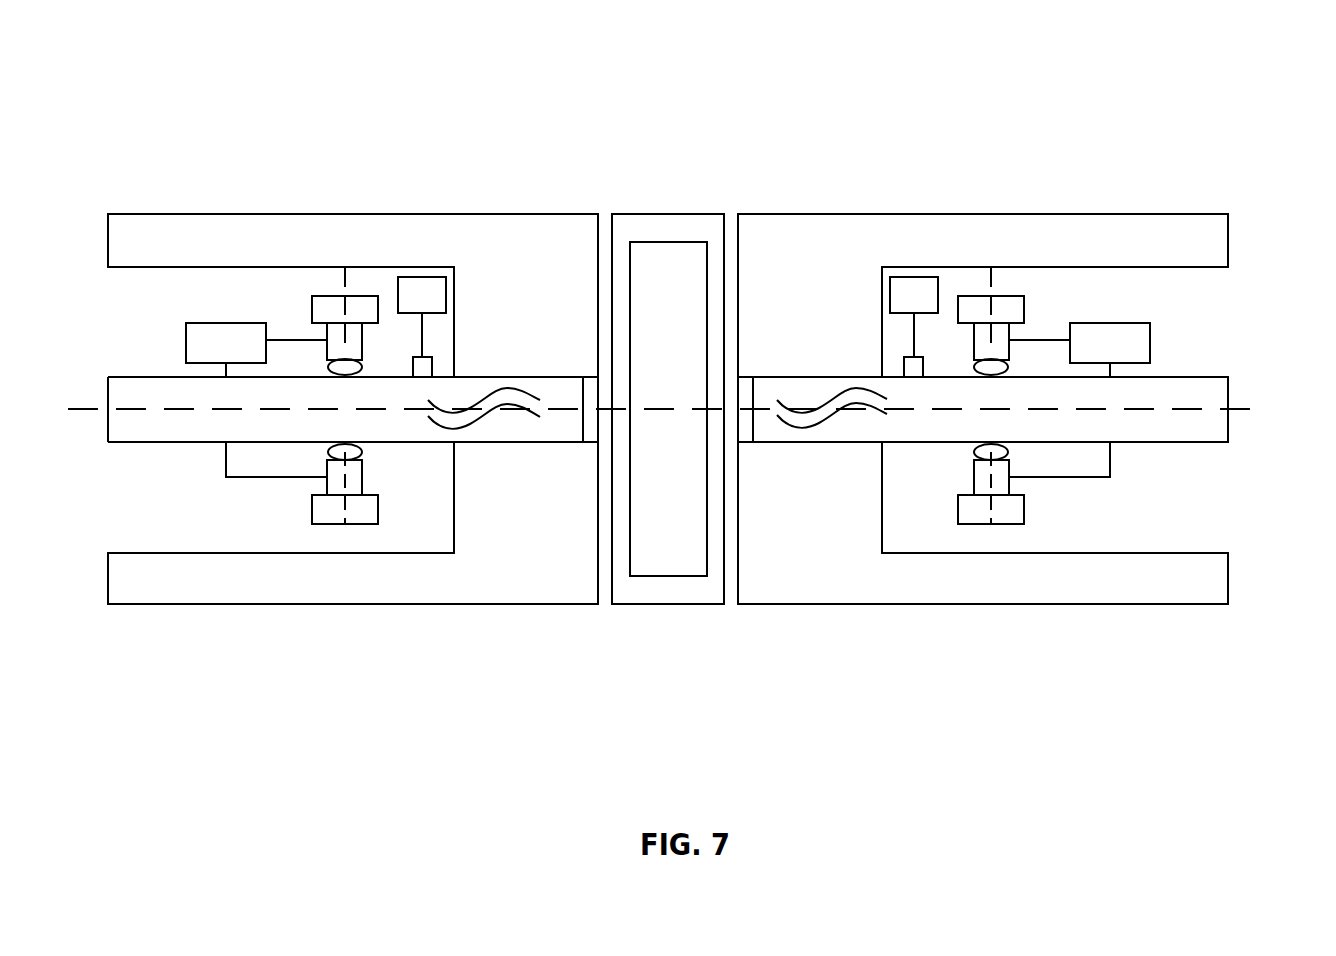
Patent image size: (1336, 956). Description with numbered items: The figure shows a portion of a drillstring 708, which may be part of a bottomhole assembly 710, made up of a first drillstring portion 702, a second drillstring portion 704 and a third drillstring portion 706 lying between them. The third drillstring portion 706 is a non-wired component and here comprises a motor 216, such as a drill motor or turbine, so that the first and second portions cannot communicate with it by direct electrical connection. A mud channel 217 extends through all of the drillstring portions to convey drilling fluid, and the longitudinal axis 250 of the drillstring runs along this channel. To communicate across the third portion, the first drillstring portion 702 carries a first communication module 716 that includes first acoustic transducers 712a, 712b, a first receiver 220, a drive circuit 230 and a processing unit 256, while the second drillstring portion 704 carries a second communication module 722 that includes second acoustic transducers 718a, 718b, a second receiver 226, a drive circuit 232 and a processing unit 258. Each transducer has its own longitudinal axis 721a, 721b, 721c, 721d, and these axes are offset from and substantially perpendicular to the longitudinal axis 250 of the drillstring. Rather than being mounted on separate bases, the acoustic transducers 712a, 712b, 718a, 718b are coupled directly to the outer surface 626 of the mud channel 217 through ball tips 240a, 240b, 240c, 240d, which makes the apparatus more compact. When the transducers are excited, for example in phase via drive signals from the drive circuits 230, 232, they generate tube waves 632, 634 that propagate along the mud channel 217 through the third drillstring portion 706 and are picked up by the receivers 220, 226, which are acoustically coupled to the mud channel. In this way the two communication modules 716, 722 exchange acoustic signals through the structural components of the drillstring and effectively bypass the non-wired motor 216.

The drillstring 708 is at (342, 102).
The bottomhole assembly 710 is at (482, 100).
The first communication module 716 is at (426, 232).
The second communication module 722 is at (1046, 232).
The first drillstring portion 702 is at (340, 605).
The second drillstring portion 704 is at (798, 605).
The third drillstring portion 706 is at (668, 605).
The motor 216 is at (672, 242).
The mud channel 217 is at (112, 395).
The longitudinal axis of the drillstring 250 is at (1233, 400).
The outer surface of the mud channel 626 is at (168, 447).
The tube wave 632 is at (465, 432).
The tube wave 634 is at (805, 432).
The drive circuit 230 is at (186, 338).
The drive circuit 232 is at (1152, 338).
The first acoustic transducer 712a is at (327, 345).
The first acoustic transducer 712b is at (333, 475).
The second acoustic transducer 718a is at (1010, 345).
The second acoustic transducer 718b is at (1003, 478).
The ball tip 240a is at (355, 376).
The ball tip 240b is at (358, 454).
The ball tip 240c is at (981, 374).
The ball tip 240d is at (980, 455).
The longitudinal axis of acoustic transducer 721a is at (345, 267).
The longitudinal axis of acoustic transducer 721b is at (345, 524).
The longitudinal axis of acoustic transducer 721c is at (991, 275).
The longitudinal axis of acoustic transducer 721d is at (991, 524).
The processing unit 256 is at (446, 298).
The processing unit 258 is at (890, 298).
The first receiver 220 is at (432, 360).
The second receiver 226 is at (906, 362).